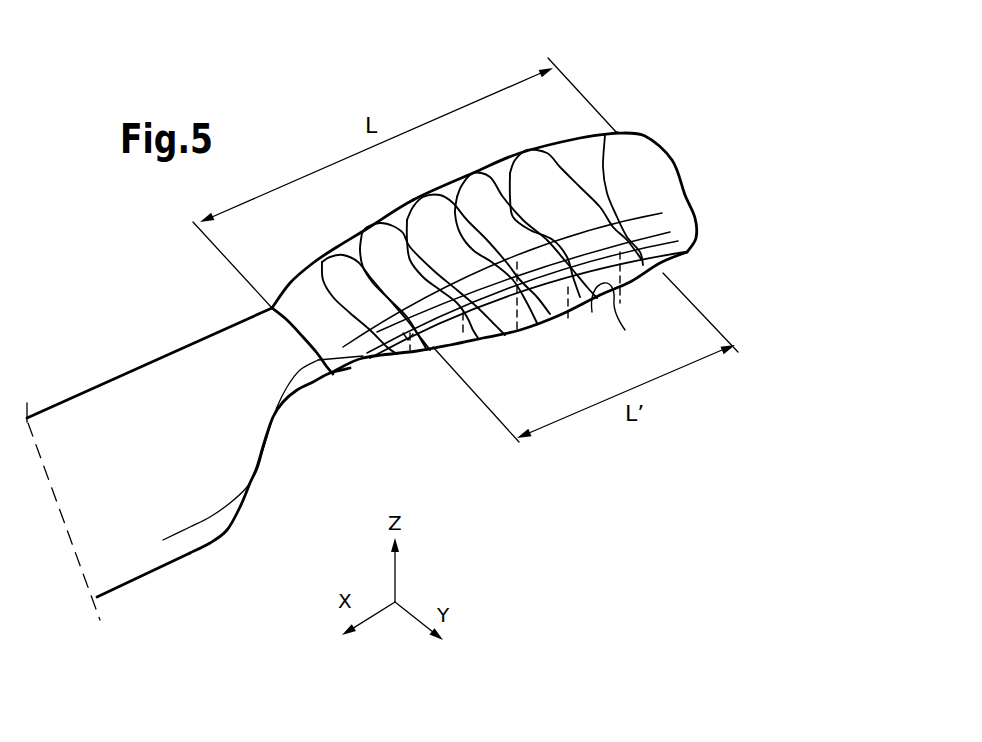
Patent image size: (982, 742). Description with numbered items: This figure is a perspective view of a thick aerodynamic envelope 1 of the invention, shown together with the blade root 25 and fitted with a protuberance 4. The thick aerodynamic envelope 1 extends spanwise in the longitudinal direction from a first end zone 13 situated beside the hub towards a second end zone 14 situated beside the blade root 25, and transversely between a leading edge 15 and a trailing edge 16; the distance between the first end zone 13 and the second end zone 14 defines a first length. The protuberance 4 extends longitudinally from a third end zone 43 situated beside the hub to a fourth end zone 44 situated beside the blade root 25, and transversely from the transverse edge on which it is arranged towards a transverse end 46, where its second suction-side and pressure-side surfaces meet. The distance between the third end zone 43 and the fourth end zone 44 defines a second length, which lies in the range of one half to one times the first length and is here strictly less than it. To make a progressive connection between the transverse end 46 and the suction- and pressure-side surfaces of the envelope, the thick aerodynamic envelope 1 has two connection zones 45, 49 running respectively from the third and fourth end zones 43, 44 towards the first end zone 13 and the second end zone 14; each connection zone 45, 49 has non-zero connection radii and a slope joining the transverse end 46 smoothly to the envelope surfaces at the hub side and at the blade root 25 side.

The thick aerodynamic envelope 1 is at (637, 110).
The protuberance 4 is at (625, 330).
The first end zone 13 is at (666, 168).
The second end zone 14 is at (322, 362).
The leading edge 15 is at (357, 233).
The trailing edge 16 is at (398, 352).
The blade root 25 is at (220, 350).
The third end zone 43 is at (673, 272).
The fourth end zone 44 is at (437, 352).
The connection zone 45 is at (428, 352).
The transverse end 46 is at (533, 338).
The connection zone 49 is at (687, 258).